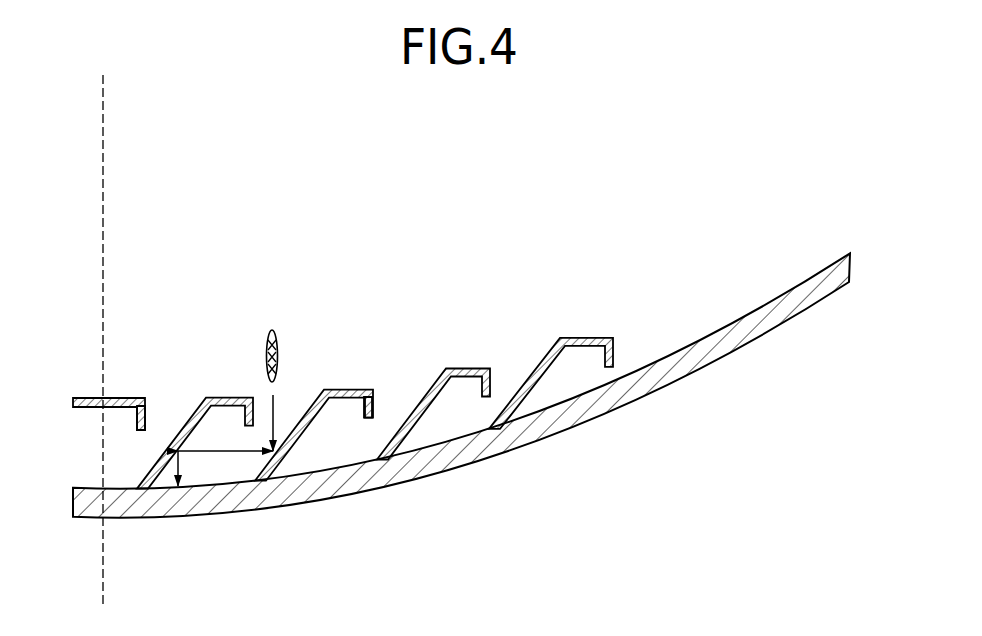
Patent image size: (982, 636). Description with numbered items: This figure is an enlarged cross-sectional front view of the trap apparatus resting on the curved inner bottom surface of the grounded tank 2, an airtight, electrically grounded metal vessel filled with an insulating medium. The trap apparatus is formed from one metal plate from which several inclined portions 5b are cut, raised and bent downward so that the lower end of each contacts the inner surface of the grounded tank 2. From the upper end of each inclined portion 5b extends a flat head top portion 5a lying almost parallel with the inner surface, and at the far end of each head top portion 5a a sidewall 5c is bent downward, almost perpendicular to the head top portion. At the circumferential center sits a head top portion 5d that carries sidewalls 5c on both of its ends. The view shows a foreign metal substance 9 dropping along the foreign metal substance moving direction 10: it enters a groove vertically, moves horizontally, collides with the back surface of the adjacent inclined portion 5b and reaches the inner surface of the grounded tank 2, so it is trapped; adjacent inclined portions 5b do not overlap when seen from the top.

The grounded tank 2 is at (673, 373).
The head top portion 5a is at (356, 388).
The inclined portion 5b is at (417, 418).
The sidewall 5c is at (147, 413).
The head top portion 5d is at (118, 398).
The foreign metal substance 9 is at (272, 330).
The foreign metal substance moving direction 10 is at (275, 418).